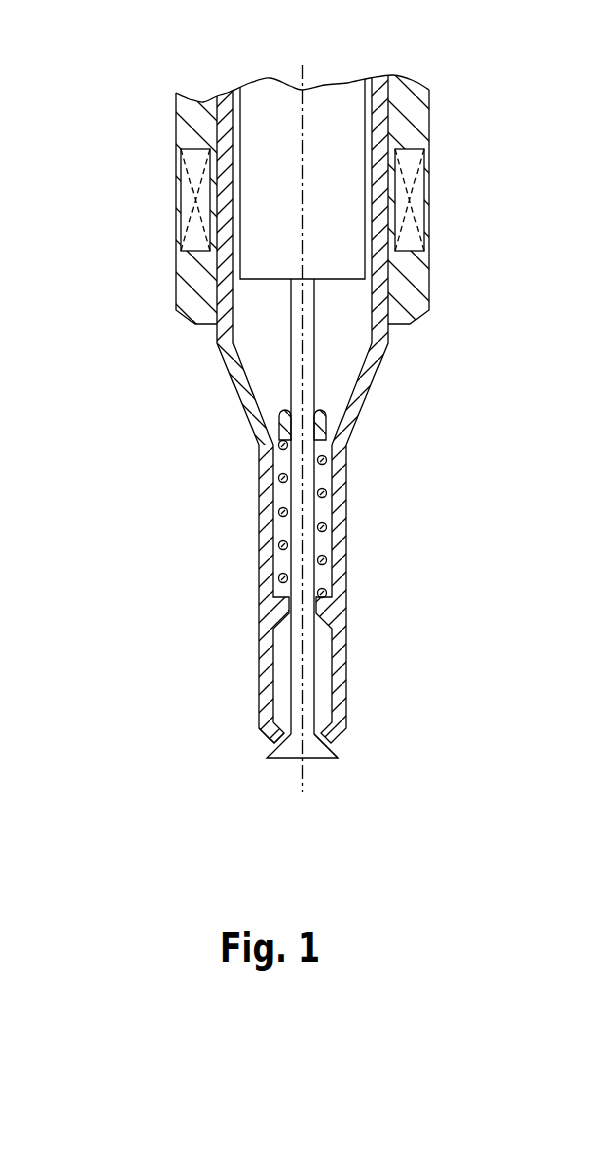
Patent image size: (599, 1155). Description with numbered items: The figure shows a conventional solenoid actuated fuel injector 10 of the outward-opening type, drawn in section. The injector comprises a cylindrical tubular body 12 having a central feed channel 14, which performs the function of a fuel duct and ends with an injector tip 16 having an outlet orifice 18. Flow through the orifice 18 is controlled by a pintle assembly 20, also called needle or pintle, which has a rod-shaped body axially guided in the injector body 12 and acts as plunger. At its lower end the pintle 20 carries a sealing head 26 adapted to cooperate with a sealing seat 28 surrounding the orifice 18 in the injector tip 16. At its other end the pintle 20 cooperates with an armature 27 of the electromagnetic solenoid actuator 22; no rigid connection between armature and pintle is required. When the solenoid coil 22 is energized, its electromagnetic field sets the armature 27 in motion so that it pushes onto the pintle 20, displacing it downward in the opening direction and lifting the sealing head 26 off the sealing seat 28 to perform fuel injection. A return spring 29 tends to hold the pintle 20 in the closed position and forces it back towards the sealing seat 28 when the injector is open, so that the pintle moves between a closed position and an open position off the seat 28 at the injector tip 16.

The solenoid actuated fuel injector 10 is at (88, 103).
The cylindrical tubular body 12 is at (375, 377).
The central feed channel 14 is at (280, 657).
The injector tip 16 is at (248, 749).
The outlet orifice 18 is at (344, 745).
The pintle assembly 20 is at (310, 653).
The solenoid actuator 22 is at (187, 202).
The sealing head 26 is at (317, 753).
The armature 27 is at (340, 118).
The sealing seat 28 is at (283, 745).
The return spring 29 is at (324, 488).